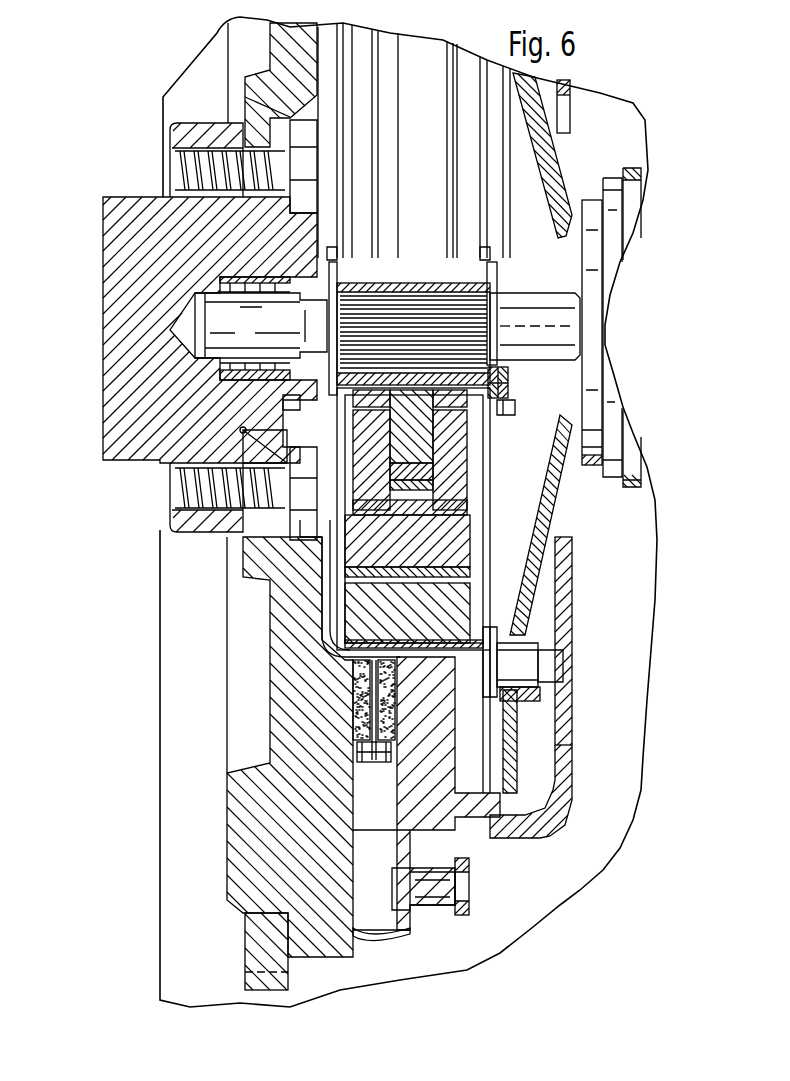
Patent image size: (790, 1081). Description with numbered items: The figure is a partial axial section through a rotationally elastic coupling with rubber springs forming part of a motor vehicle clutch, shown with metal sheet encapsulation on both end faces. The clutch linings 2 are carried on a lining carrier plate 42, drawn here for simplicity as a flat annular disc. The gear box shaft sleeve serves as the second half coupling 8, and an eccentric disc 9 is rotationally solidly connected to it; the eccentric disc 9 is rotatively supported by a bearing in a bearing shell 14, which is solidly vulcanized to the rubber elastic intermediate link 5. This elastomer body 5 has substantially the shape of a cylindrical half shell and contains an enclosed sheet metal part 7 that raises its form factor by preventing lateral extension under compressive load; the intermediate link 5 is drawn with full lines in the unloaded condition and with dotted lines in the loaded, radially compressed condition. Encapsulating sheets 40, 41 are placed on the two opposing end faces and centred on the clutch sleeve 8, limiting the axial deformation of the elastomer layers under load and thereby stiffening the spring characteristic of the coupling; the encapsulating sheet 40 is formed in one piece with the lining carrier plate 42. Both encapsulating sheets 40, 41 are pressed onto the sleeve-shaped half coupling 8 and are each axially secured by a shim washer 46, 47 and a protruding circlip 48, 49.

The clutch linings 2 is at (352, 797).
The elastomer body 5 is at (340, 611).
The sheet metal part 7 is at (330, 572).
The second half coupling 8 is at (510, 380).
The eccentric disc 9 is at (487, 377).
The bearing shell 14 is at (453, 455).
The encapsulating sheet 40 is at (300, 533).
The encapsulating sheet 41 is at (487, 480).
The lining carrier plate 42 is at (355, 680).
The shim washer 46 is at (292, 403).
The shim washer 47 is at (503, 412).
The circlip 48 is at (240, 388).
The circlip 49 is at (497, 258).